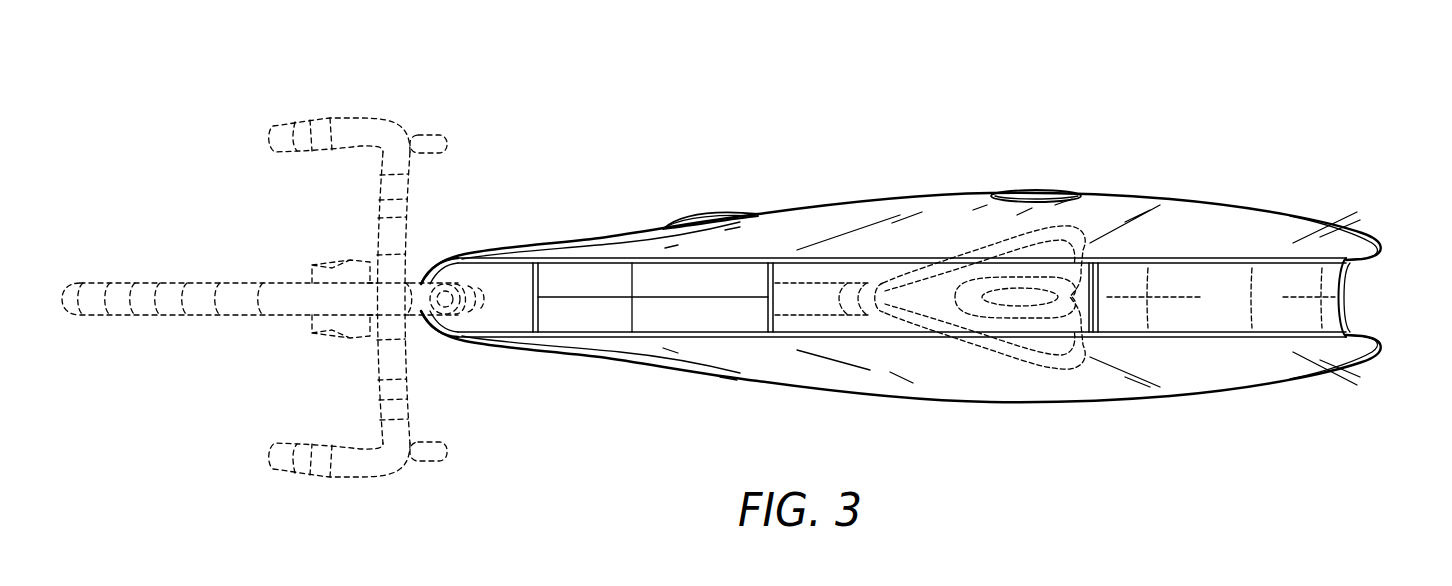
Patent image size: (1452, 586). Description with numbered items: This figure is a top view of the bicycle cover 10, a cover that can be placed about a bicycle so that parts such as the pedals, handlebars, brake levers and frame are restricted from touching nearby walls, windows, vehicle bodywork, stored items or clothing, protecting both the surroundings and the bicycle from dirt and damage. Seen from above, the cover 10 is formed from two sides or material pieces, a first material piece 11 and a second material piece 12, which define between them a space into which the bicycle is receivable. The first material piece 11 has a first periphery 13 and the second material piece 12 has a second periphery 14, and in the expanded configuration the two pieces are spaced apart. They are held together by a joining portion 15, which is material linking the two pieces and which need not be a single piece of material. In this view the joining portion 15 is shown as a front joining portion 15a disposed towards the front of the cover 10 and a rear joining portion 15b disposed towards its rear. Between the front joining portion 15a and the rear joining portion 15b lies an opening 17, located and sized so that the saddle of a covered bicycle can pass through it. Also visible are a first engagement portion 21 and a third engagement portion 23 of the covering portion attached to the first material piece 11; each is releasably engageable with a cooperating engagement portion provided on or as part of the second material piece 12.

The cover 10 is at (857, 98).
The first material piece 11 is at (1200, 375).
The second material piece 12 is at (1197, 223).
The first periphery 13 is at (1383, 352).
The second periphery 14 is at (1383, 247).
The joining portion 15 is at (1128, 323).
The front joining portion 15a is at (573, 322).
The rear joining portion 15b is at (1297, 277).
The opening 17 is at (800, 322).
The first engagement portion 21 is at (702, 213).
The third engagement portion 23 is at (1052, 190).